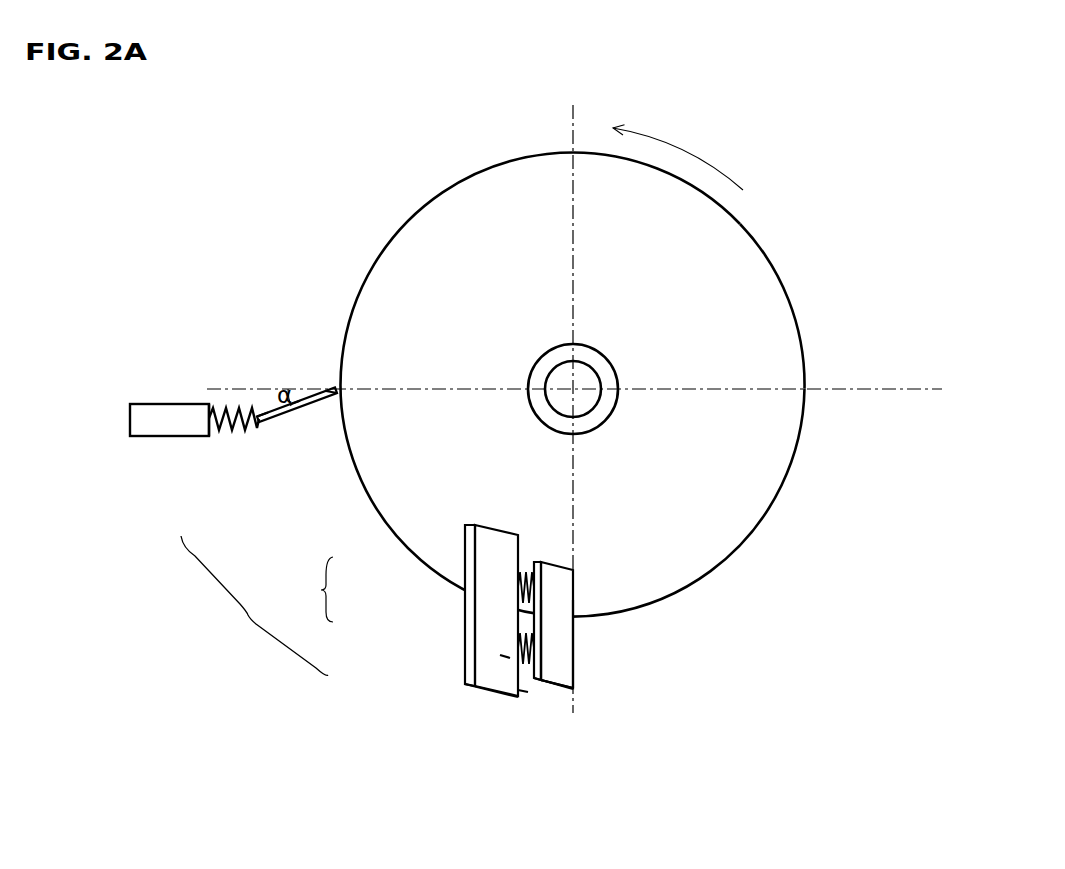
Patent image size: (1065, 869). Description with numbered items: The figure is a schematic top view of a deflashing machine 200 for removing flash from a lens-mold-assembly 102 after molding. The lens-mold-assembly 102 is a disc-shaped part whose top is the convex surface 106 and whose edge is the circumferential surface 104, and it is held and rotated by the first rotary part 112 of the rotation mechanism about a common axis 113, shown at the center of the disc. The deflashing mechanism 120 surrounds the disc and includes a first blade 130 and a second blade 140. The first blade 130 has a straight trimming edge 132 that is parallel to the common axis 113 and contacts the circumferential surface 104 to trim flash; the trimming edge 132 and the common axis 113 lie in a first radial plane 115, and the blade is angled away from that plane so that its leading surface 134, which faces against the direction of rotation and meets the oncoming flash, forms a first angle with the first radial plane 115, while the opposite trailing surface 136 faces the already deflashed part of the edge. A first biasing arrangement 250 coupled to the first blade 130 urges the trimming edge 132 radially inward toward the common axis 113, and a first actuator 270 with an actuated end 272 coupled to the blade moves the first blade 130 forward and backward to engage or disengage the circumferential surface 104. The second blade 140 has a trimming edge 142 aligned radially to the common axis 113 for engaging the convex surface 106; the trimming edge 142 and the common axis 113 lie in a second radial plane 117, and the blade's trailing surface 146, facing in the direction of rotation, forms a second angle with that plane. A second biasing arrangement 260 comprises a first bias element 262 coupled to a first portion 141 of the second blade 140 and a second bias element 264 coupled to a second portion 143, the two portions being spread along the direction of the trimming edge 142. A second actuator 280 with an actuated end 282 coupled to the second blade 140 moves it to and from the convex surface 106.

The deflashing machine 200 is at (785, 153).
The lens-mold-assembly 102 is at (777, 254).
The circumferential surface 104 is at (797, 314).
The convex surface 106 is at (752, 309).
The first rotary part 112 is at (595, 409).
The common axis 113 is at (572, 388).
The first radial plane 115 is at (242, 389).
The second radial plane 117 is at (577, 702).
The deflashing mechanism 120 is at (254, 605).
The first blade 130 is at (274, 423).
The trimming edge 132 is at (335, 393).
The leading surface 134 is at (270, 404).
The trailing surface 136 is at (294, 414).
The second blade 140 is at (563, 676).
The first portion 141 is at (548, 588).
The trimming edge 142 is at (577, 640).
The second portion 143 is at (546, 648).
The trailing surface 146 is at (563, 662).
The first biasing arrangement 250 is at (242, 431).
The second biasing arrangement 260 is at (306, 589).
The first bias element 262 is at (520, 582).
The second bias element 264 is at (520, 645).
The first actuator 270 is at (194, 424).
The actuated end 272 is at (210, 403).
The second actuator 280 is at (505, 660).
The actuated end 282 is at (528, 690).